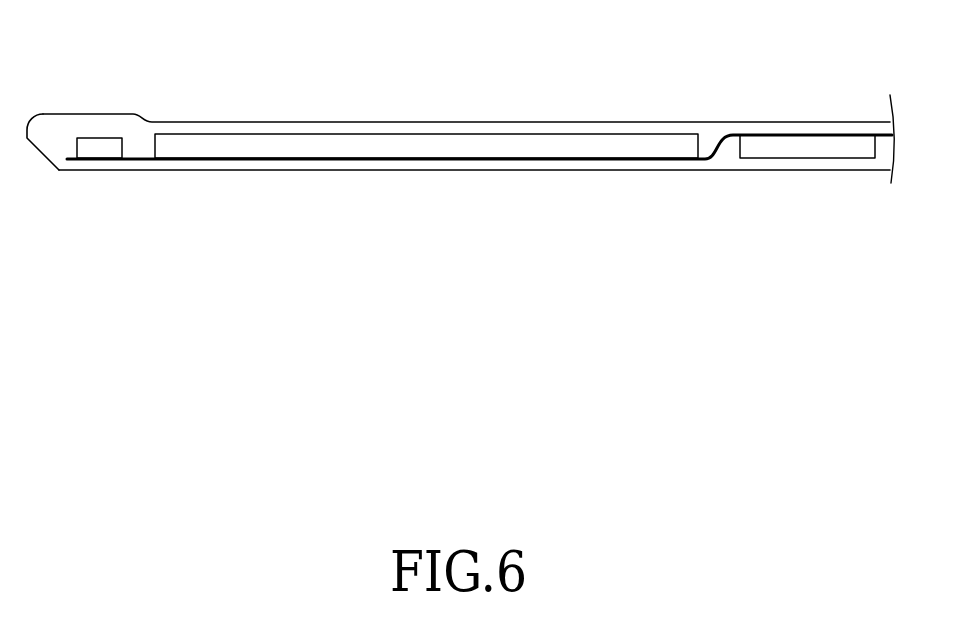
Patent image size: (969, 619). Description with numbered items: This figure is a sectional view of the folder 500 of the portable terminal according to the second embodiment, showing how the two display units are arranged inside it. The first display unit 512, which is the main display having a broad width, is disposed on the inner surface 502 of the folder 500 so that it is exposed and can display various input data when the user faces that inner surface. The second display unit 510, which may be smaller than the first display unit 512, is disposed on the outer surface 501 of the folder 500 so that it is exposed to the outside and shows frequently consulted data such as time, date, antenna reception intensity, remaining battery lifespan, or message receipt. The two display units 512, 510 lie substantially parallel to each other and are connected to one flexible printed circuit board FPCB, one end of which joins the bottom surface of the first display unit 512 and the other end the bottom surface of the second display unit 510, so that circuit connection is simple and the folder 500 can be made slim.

The folder 500 is at (443, 88).
The outer surface 501 is at (615, 171).
The inner surface 502 is at (340, 121).
The second display unit 510 is at (800, 151).
The first display unit 512 is at (572, 148).
The flexible printed circuit board FPCB is at (283, 160).